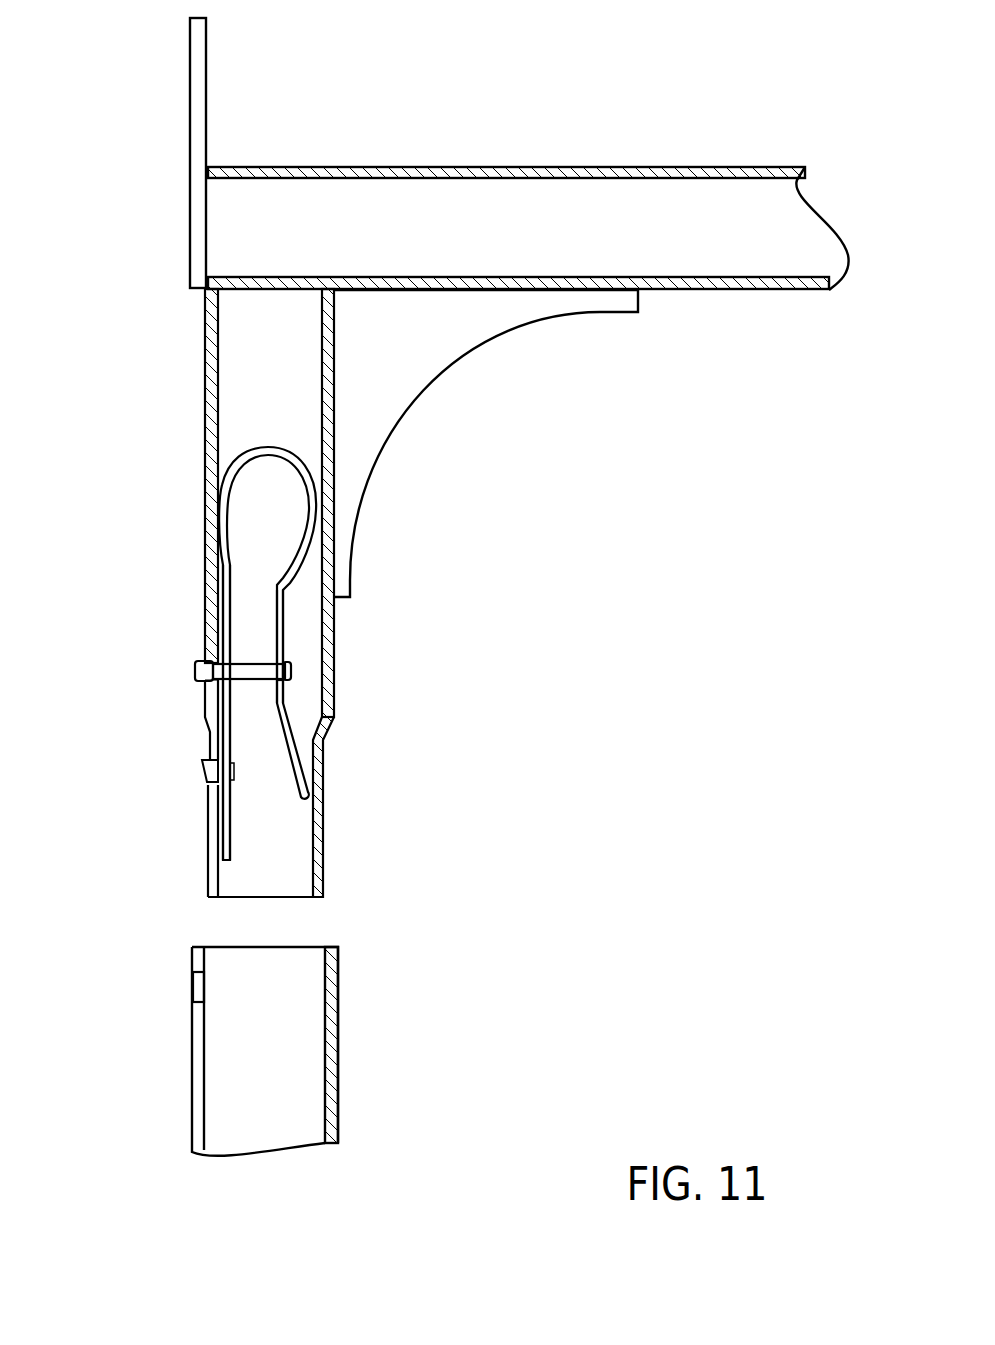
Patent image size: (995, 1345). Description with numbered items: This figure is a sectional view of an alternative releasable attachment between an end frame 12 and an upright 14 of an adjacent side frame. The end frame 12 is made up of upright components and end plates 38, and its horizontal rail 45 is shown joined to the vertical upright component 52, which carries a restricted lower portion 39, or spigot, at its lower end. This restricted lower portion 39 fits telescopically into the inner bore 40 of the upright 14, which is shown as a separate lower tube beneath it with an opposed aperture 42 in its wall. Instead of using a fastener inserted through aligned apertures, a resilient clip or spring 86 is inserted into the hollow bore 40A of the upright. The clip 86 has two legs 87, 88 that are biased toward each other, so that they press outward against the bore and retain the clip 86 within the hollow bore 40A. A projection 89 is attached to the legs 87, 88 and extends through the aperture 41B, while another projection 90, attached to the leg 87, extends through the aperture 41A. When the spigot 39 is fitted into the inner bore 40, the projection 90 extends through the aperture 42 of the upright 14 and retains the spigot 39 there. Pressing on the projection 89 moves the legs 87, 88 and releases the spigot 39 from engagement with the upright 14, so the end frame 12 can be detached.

The end frame 12 is at (498, 117).
The upright 14 is at (332, 1097).
The end plate 38 is at (197, 87).
The restricted lower portion 39 is at (323, 866).
The inner bore 40 is at (290, 1022).
The hollow bore 40A is at (280, 377).
The aperture 41A is at (203, 782).
The aperture 41B is at (200, 685).
The aperture 42 is at (192, 987).
The horizontal rail 45 is at (618, 173).
The leg socket tube 52 is at (215, 355).
The resilient clip or spring 86 is at (303, 605).
The leg 87 is at (222, 597).
The leg 88 is at (287, 640).
The projection 89 is at (260, 680).
The projection 90 is at (203, 765).